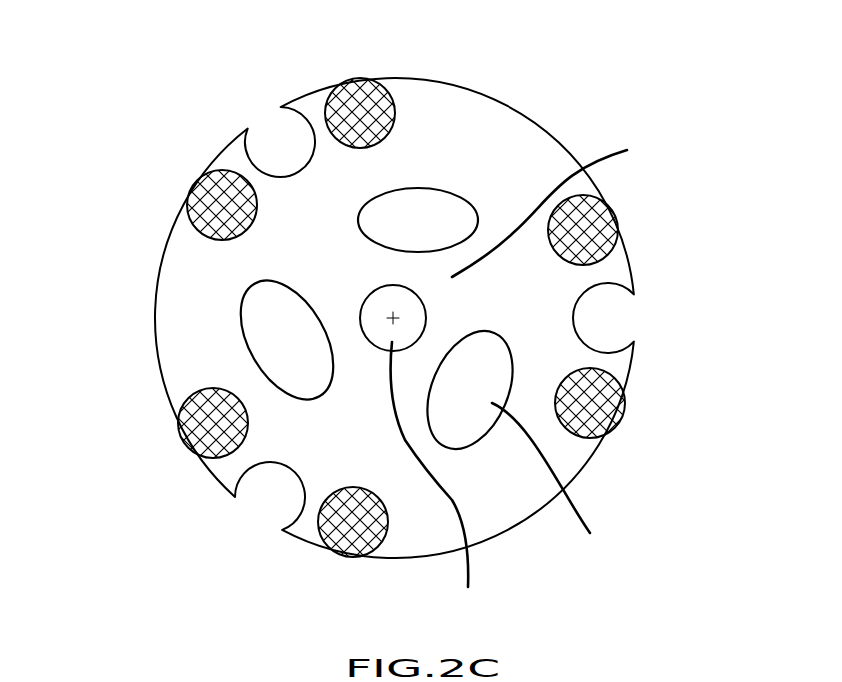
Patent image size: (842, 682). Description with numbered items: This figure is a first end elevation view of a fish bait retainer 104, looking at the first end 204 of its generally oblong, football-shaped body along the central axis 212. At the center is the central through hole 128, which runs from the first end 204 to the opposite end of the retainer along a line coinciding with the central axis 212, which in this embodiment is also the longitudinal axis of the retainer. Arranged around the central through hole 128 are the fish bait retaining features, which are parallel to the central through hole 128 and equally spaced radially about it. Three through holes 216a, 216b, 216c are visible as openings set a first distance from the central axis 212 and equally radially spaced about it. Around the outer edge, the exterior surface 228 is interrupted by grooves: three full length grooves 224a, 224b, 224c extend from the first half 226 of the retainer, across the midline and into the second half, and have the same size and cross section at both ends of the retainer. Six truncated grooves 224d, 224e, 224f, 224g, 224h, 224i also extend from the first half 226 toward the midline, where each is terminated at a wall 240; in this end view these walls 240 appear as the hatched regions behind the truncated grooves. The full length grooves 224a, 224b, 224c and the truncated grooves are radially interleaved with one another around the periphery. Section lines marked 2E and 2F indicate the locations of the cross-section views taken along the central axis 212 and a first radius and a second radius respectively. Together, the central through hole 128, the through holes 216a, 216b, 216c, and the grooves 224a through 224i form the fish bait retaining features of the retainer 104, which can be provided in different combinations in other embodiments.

The fish bait retainer 104 is at (556, 112).
The central through hole 128 is at (439, 479).
The first end 204 is at (560, 206).
The central axis 212 is at (393, 318).
The through hole 216a is at (427, 187).
The through hole 216b is at (497, 465).
The through hole 216c is at (268, 348).
The full length groove 224a is at (267, 140).
The full length groove 224b is at (617, 300).
The full length groove 224c is at (275, 497).
The truncated groove 224d is at (367, 97).
The truncated groove 224e is at (598, 225).
The truncated groove 224f is at (613, 403).
The truncated groove 224g is at (368, 540).
The truncated groove 224h is at (208, 430).
The truncated groove 224i is at (198, 198).
The first half 226 is at (557, 483).
The exterior surface 228 is at (493, 128).
The wall 240 is at (365, 97).
The section line 2E is at (613, 200).
The section line 2F is at (637, 312).